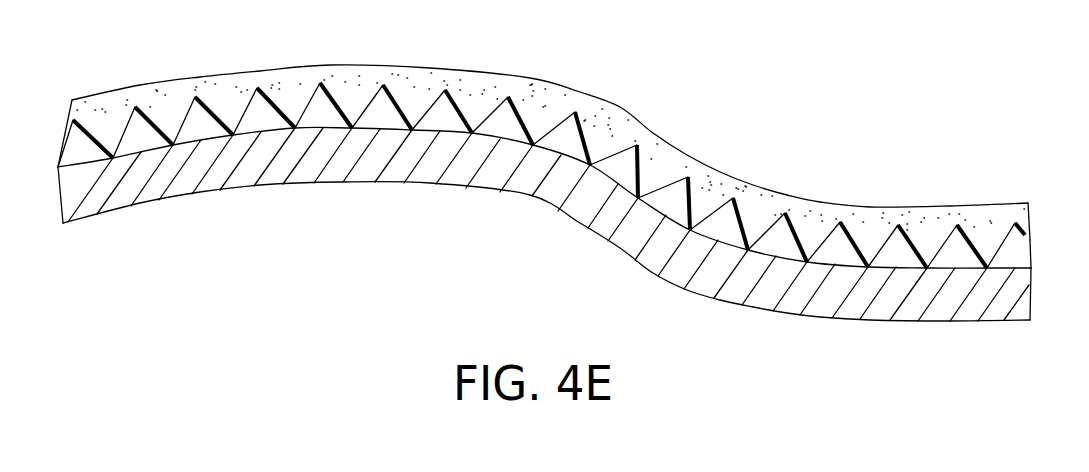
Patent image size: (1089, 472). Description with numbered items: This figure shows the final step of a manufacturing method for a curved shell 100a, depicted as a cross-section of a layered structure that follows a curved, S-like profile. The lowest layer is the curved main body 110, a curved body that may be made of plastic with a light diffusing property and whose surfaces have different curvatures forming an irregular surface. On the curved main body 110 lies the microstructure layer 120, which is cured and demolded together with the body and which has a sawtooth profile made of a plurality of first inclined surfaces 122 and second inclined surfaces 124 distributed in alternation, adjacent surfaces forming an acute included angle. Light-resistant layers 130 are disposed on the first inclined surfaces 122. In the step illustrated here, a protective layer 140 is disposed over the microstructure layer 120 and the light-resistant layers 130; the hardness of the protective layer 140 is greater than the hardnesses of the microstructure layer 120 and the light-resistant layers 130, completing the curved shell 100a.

The curved shell 100a is at (568, 215).
The curved main body 110 is at (1022, 292).
The microstructure layer 120 is at (568, 224).
The first inclined surfaces 122 is at (908, 253).
The second inclined surfaces 124 is at (883, 248).
The light-resistant layers 130 is at (912, 233).
The protective layer 140 is at (992, 212).